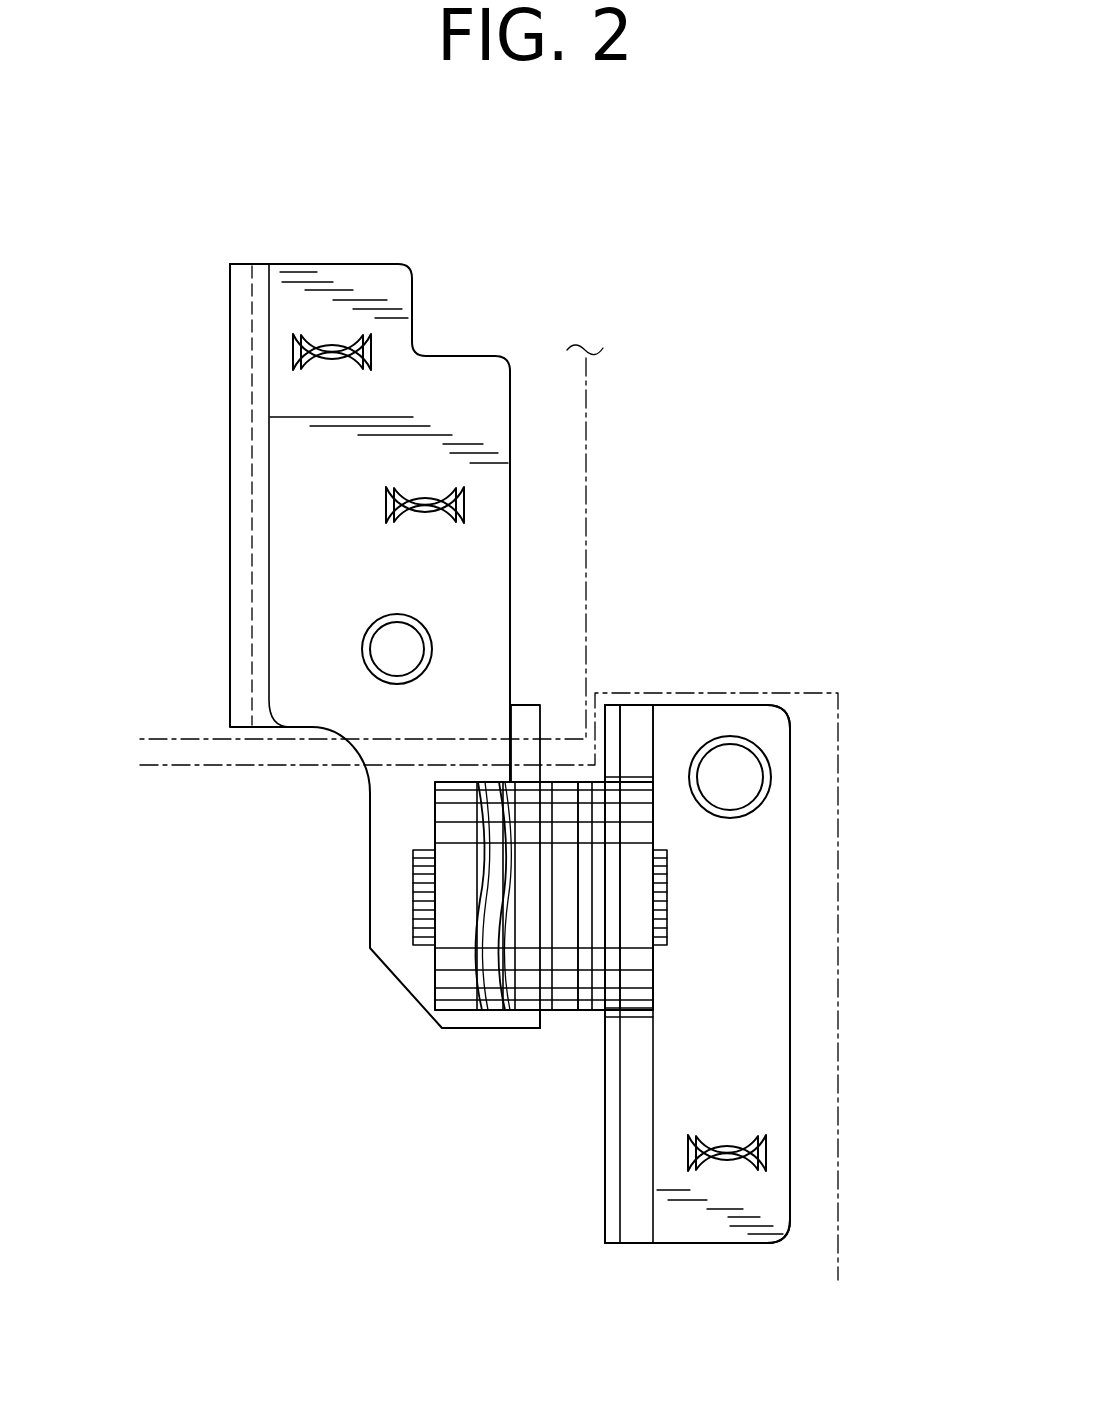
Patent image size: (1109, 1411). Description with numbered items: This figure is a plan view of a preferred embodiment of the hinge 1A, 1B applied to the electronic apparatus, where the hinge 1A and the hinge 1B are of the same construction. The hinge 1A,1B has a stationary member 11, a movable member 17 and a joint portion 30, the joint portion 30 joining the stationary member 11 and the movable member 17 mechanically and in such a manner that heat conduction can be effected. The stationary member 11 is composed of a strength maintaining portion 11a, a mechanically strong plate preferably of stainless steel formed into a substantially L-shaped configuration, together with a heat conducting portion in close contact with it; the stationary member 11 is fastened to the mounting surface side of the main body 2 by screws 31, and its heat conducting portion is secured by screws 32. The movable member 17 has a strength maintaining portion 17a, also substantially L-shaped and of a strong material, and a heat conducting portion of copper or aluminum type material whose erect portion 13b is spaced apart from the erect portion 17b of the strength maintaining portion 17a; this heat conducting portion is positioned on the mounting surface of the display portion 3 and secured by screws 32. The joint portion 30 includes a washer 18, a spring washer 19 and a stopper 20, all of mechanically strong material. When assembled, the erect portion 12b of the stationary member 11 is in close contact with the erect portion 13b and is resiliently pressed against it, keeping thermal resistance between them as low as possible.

The hinge 1A,1B is at (756, 708).
The hinge 1A is at (756, 708).
The hinge 1B is at (720, 297).
The main body 2 is at (842, 1113).
The display portion 3 is at (586, 453).
The stationary member 11 is at (745, 697).
The strength maintaining portion 11a is at (637, 778).
The erect portion 12b is at (612, 780).
The erect portion 13b is at (590, 1005).
The movable member 17 is at (515, 363).
The strength maintaining portion 17a is at (302, 647).
The erect portion 17b is at (533, 1008).
The washer 18 is at (508, 1008).
The spring washer 19 is at (490, 1007).
The stopper 20 is at (460, 1007).
The joint portion 30 is at (530, 1019).
The screws 31 is at (753, 1115).
The screws 32 is at (363, 637).